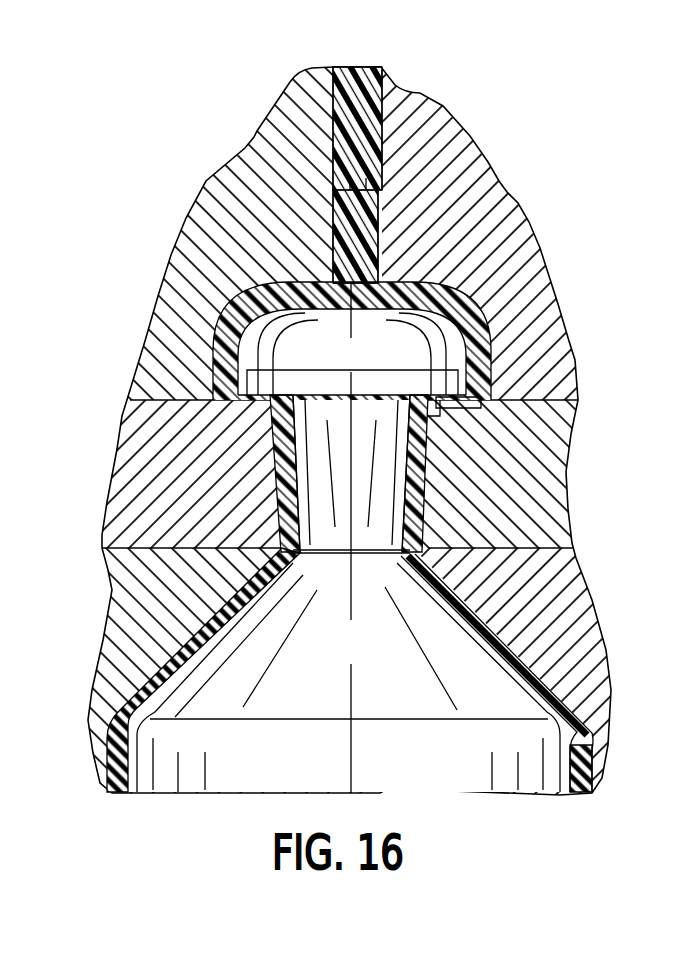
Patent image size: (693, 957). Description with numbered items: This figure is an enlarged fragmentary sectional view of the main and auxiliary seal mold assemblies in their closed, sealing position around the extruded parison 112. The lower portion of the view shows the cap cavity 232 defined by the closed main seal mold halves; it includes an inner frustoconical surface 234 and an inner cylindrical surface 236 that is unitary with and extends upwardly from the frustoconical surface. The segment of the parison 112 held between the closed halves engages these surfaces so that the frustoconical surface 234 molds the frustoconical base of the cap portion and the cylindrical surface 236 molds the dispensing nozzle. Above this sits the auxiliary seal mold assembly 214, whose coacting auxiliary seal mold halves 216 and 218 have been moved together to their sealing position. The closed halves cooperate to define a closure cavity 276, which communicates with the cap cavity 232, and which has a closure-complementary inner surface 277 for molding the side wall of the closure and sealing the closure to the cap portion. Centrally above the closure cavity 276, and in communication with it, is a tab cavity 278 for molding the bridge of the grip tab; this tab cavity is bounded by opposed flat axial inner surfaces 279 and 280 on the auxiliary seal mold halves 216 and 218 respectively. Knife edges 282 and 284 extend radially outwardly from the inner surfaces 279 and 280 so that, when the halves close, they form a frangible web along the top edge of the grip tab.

The extruded parison 112 is at (470, 305).
The auxiliary seal mold assembly 214 is at (480, 129).
The auxiliary seal mold half 216 is at (500, 204).
The auxiliary seal mold half 218 is at (223, 193).
The cap cavity 232 is at (323, 657).
The inner frustoconical surface 234 is at (505, 641).
The inner cylindrical surface 236 is at (279, 483).
The closure cavity 276 is at (328, 366).
The closure-complementary inner surface 277 is at (498, 332).
The tab cavity 278 is at (333, 280).
The flat axial inner surface 279 is at (384, 209).
The flat axial inner surface 280 is at (336, 216).
The knife edge 282 is at (373, 182).
The knife edge 284 is at (340, 175).